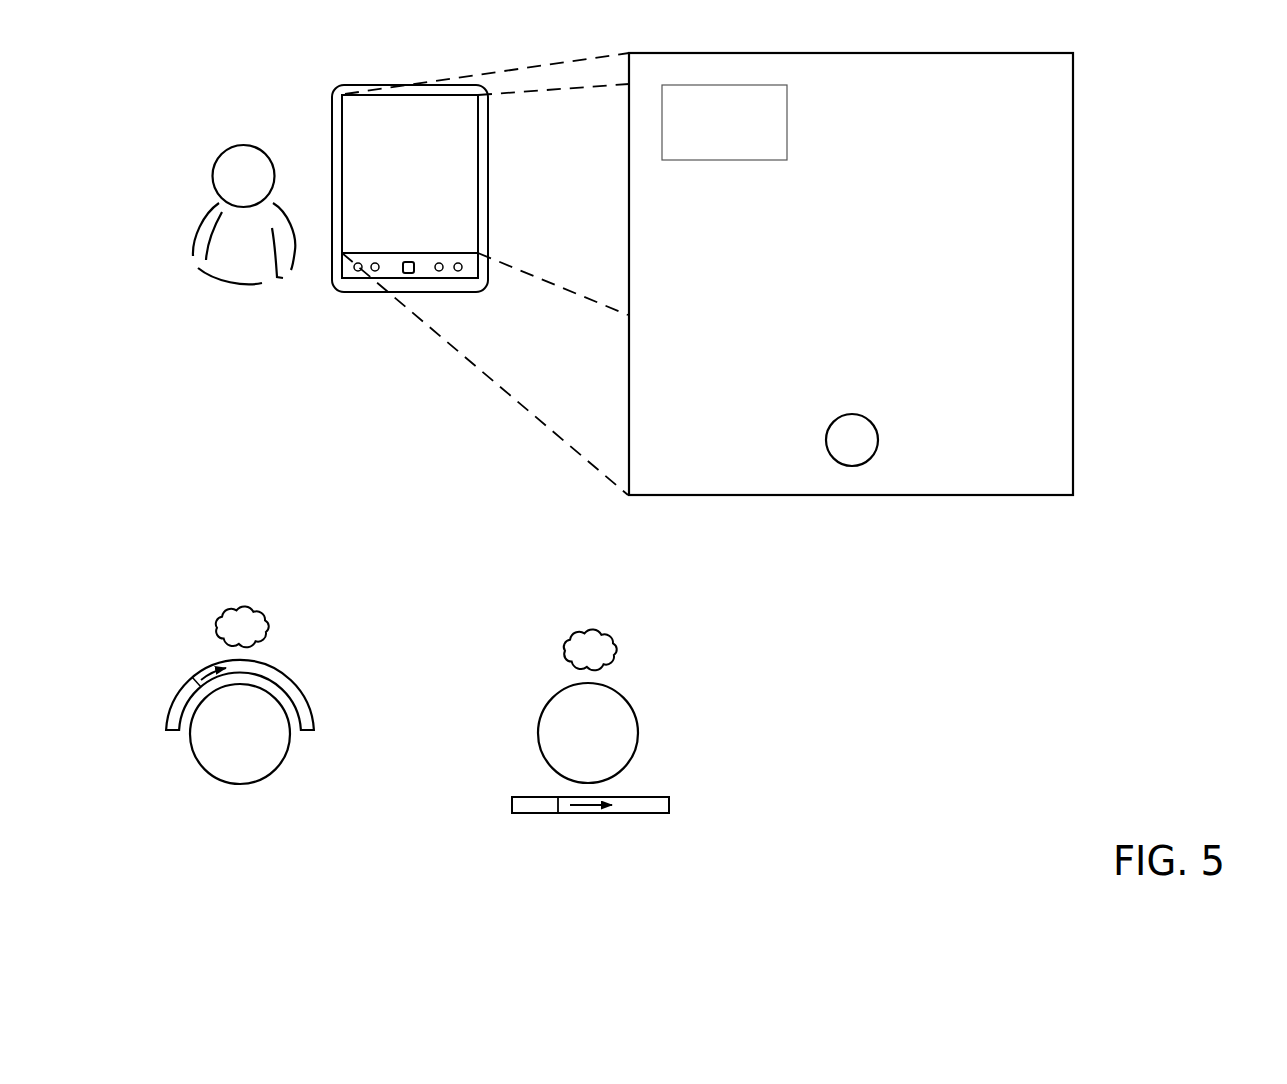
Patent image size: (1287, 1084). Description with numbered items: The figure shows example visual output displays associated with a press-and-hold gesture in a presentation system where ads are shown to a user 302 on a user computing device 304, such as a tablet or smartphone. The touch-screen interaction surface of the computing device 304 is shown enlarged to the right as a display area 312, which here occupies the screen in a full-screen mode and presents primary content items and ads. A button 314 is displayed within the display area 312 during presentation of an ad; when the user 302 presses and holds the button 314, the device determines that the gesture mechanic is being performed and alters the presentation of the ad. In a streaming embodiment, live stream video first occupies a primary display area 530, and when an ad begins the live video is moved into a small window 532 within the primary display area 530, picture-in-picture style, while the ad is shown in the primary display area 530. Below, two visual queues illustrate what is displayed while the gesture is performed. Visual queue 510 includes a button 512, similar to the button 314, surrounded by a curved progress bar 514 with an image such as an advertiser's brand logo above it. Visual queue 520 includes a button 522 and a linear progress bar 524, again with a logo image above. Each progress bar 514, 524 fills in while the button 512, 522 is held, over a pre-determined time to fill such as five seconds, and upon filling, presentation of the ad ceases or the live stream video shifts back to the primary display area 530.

The user 302 is at (213, 203).
The user computing device 304 is at (369, 172).
The display area 312 is at (877, 274).
The button 314 is at (880, 422).
The visual queue 510 is at (298, 672).
The button 512 is at (280, 765).
The progress bar 514 is at (310, 715).
The visual queue 520 is at (637, 700).
The button 522 is at (635, 750).
The progress bar 524 is at (655, 813).
The primary display area 530 is at (671, 166).
The small window 532 is at (658, 120).